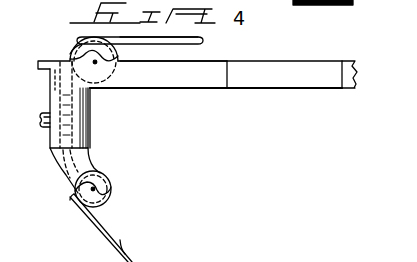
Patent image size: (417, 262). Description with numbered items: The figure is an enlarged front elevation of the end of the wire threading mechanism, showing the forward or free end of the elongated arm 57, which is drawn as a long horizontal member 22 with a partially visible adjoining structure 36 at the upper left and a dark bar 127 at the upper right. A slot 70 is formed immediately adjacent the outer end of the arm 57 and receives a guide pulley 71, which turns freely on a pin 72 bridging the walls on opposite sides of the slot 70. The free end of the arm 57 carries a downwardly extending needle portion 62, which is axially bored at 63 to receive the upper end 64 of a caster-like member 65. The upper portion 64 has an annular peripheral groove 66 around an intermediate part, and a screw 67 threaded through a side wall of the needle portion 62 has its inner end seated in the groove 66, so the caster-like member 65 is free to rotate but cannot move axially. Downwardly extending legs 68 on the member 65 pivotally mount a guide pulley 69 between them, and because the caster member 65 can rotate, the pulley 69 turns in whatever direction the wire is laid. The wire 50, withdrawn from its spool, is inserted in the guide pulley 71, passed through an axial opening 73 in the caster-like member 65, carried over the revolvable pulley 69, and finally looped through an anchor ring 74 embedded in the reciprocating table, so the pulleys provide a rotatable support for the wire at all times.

The plate 22 is at (320, 94).
The frame member 36 is at (10, 27).
The wire 50 is at (198, 40).
The elongated arm 57 is at (282, 89).
The needle portion 62 is at (90, 118).
The axial bore 63 is at (58, 78).
The upper end of caster-like member 64 is at (58, 150).
The caster-like member 65 is at (90, 160).
The annular peripheral groove 66 is at (45, 113).
The screw 67 is at (50, 130).
The downwardly extending legs 68 is at (78, 198).
The guide pulley 69 is at (112, 187).
The slot 70 is at (118, 92).
The guide pulley 71 is at (128, 50).
The pin 72 is at (96, 63).
The axial opening 73 is at (62, 150).
The anchor ring 74 is at (178, 243).
The bar 127 is at (331, 5).